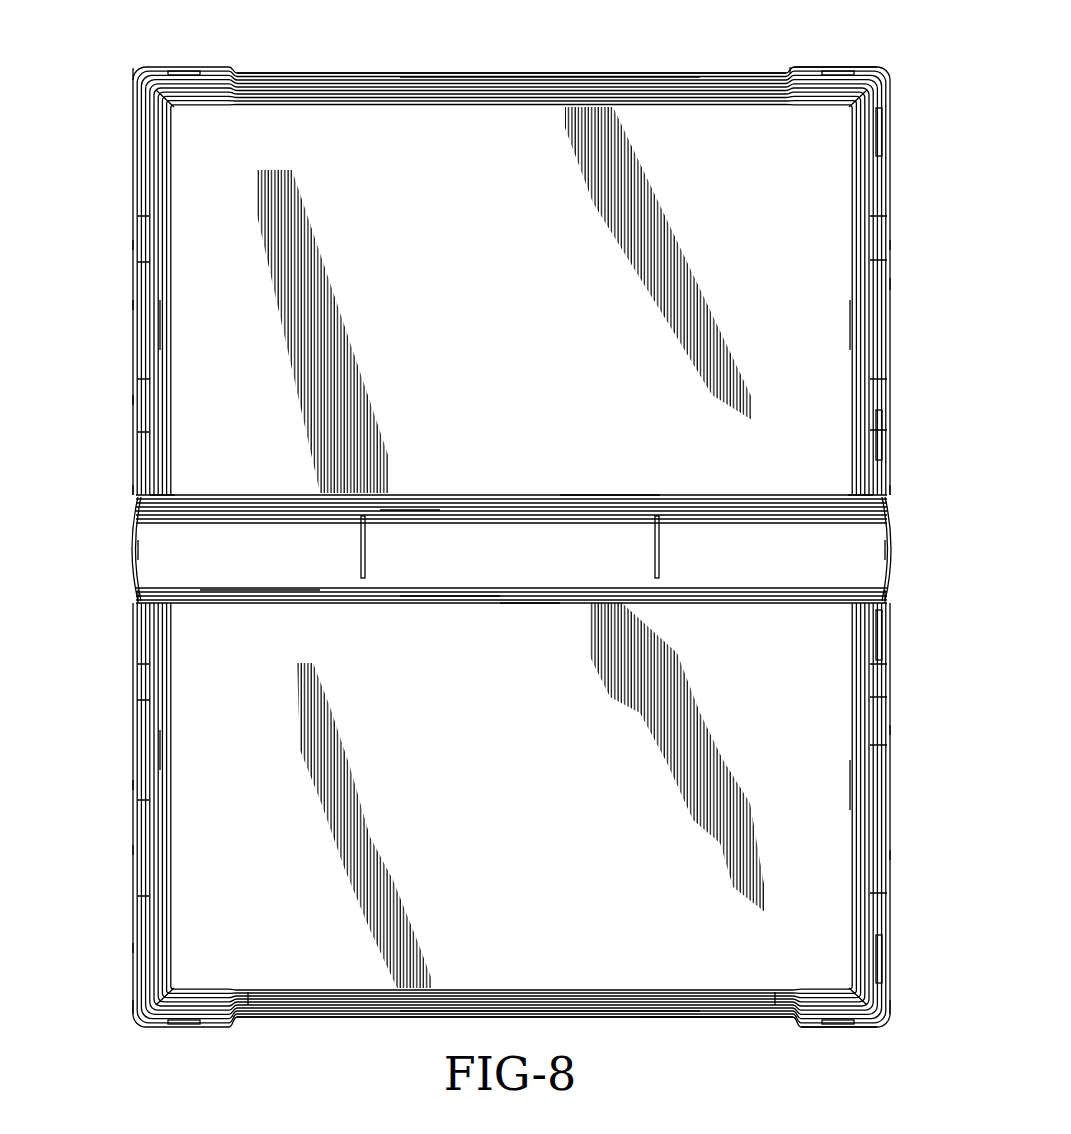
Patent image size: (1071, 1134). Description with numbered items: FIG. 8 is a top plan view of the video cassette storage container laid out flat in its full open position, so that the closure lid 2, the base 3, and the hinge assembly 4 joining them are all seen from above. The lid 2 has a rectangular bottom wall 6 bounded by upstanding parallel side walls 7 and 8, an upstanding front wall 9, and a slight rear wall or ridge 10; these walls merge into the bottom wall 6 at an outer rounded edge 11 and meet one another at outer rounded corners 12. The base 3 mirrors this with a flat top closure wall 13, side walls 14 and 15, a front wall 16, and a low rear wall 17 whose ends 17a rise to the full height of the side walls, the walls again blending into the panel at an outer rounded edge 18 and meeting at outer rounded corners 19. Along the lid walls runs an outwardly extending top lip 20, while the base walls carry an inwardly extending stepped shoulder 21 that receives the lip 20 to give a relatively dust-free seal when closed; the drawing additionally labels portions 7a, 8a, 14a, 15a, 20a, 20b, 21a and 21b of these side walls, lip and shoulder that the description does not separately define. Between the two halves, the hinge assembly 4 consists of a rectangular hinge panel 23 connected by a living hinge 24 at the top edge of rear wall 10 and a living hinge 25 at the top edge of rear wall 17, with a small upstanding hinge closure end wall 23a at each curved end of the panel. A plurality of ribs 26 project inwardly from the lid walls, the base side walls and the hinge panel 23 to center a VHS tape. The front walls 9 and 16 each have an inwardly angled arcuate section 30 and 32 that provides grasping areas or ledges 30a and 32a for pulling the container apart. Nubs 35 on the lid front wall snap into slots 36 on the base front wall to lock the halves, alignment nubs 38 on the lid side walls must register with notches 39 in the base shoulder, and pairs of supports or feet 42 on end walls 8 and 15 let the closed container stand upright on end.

The closure lid 2 is at (818, 784).
The base 3 is at (816, 326).
The hinge assembly 4 is at (510, 540).
The bottom wall 6 is at (497, 805).
The side wall 7 is at (133, 948).
The lower left side wall end 7a is at (138, 601).
The side wall 8 is at (890, 856).
The lower right side wall end 8a is at (888, 601).
The front wall 9 is at (183, 70).
The rear wall 10 is at (512, 604).
The outer rounded edge 11 is at (160, 748).
The outer rounded corners 12 is at (136, 1024).
The top closure wall 13 is at (494, 280).
The side wall 14 is at (133, 306).
The upper left side wall end 14a is at (133, 494).
The side wall 15 is at (890, 284).
The upper right side wall end 15a is at (888, 495).
The front wall 16 is at (851, 70).
The rear wall 17 is at (605, 494).
The end of rear wall 17a is at (165, 494).
The outer rounded edge 18 is at (163, 326).
The outer rounded corners 19 is at (140, 69).
The top lip 20 is at (133, 850).
The lower flange inner edge 20a is at (868, 745).
The lower flange outer edge 20b is at (890, 730).
The stepped shoulder 21 is at (133, 401).
The upper flange outer edge 21a is at (797, 70).
The upper flange inner edge 21b is at (708, 90).
The hinge panel 23 is at (458, 592).
The hinge closure end wall 23a is at (140, 549).
The living hinge 24 is at (262, 590).
The living hinge 25 is at (413, 507).
The ribs 26 is at (153, 218).
The inwardly angled arcuate-shaped section 30 is at (373, 1018).
The grasping area 30a is at (597, 1018).
The inwardly angled arcuate-shaped section 32 is at (531, 88).
The grasping area 32a is at (580, 86).
The nubs 35 is at (183, 1020).
The slots 36 is at (185, 78).
The alignment nubs 38 is at (150, 664).
The notches 39 is at (148, 432).
The supports 42 is at (880, 140).